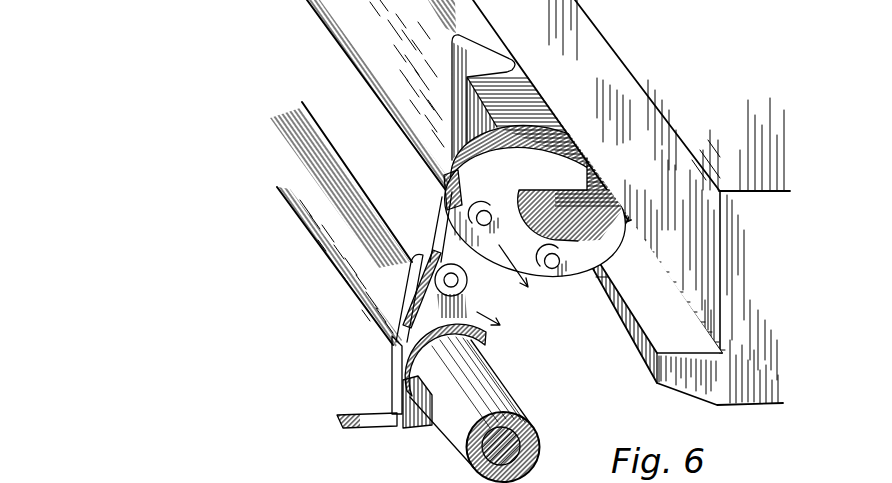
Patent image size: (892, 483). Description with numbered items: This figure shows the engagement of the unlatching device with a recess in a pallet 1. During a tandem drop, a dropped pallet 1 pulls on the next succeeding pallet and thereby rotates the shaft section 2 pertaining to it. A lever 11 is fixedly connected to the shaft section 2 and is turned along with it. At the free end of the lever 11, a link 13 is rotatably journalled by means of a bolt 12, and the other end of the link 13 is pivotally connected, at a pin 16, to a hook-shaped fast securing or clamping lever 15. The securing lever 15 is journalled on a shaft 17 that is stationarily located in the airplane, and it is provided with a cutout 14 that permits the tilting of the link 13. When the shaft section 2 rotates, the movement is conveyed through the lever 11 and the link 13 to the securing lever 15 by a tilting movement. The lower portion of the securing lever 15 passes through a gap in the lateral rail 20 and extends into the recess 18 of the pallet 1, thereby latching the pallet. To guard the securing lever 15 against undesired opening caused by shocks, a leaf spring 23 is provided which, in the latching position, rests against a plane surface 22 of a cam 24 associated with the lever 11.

The pallet 1 is at (688, 73).
The shaft section 2 is at (531, 430).
The lever 11 is at (420, 291).
The bolt 12 is at (432, 262).
The link 13 is at (460, 233).
The cutout 14 is at (440, 195).
The securing lever 15 is at (530, 163).
The pin 16 is at (505, 285).
The shaft 17 is at (557, 272).
The recess 18 is at (615, 195).
The lateral rail 20 is at (358, 20).
The plane surface 22 is at (393, 423).
The leaf spring 23 is at (365, 415).
The cam 24 is at (412, 425).